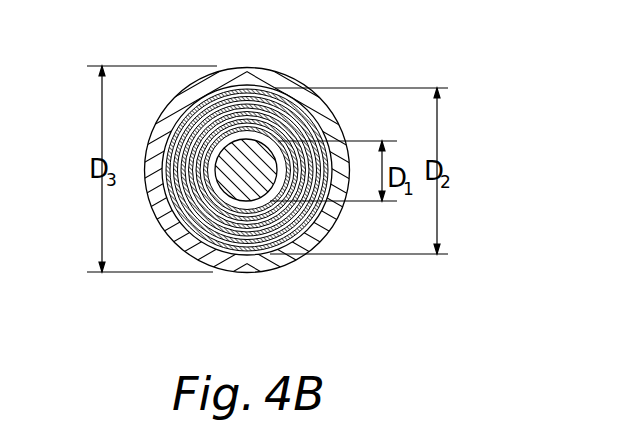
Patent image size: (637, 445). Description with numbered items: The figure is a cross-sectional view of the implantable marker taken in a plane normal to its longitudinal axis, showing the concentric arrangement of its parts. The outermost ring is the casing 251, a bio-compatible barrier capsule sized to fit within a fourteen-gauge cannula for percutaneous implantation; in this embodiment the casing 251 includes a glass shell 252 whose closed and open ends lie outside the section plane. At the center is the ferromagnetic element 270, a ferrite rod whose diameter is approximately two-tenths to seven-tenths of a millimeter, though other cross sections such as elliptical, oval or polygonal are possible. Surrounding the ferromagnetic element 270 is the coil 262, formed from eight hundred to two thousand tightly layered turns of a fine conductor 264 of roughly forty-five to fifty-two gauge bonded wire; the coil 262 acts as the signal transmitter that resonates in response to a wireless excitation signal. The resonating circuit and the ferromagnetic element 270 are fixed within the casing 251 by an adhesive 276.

The casing 251 is at (263, 69).
The shell 252 is at (167, 117).
The coil 262 is at (188, 229).
The conductor 264 is at (229, 236).
The ferromagnetic element 270 is at (253, 157).
The adhesive 276 is at (296, 232).